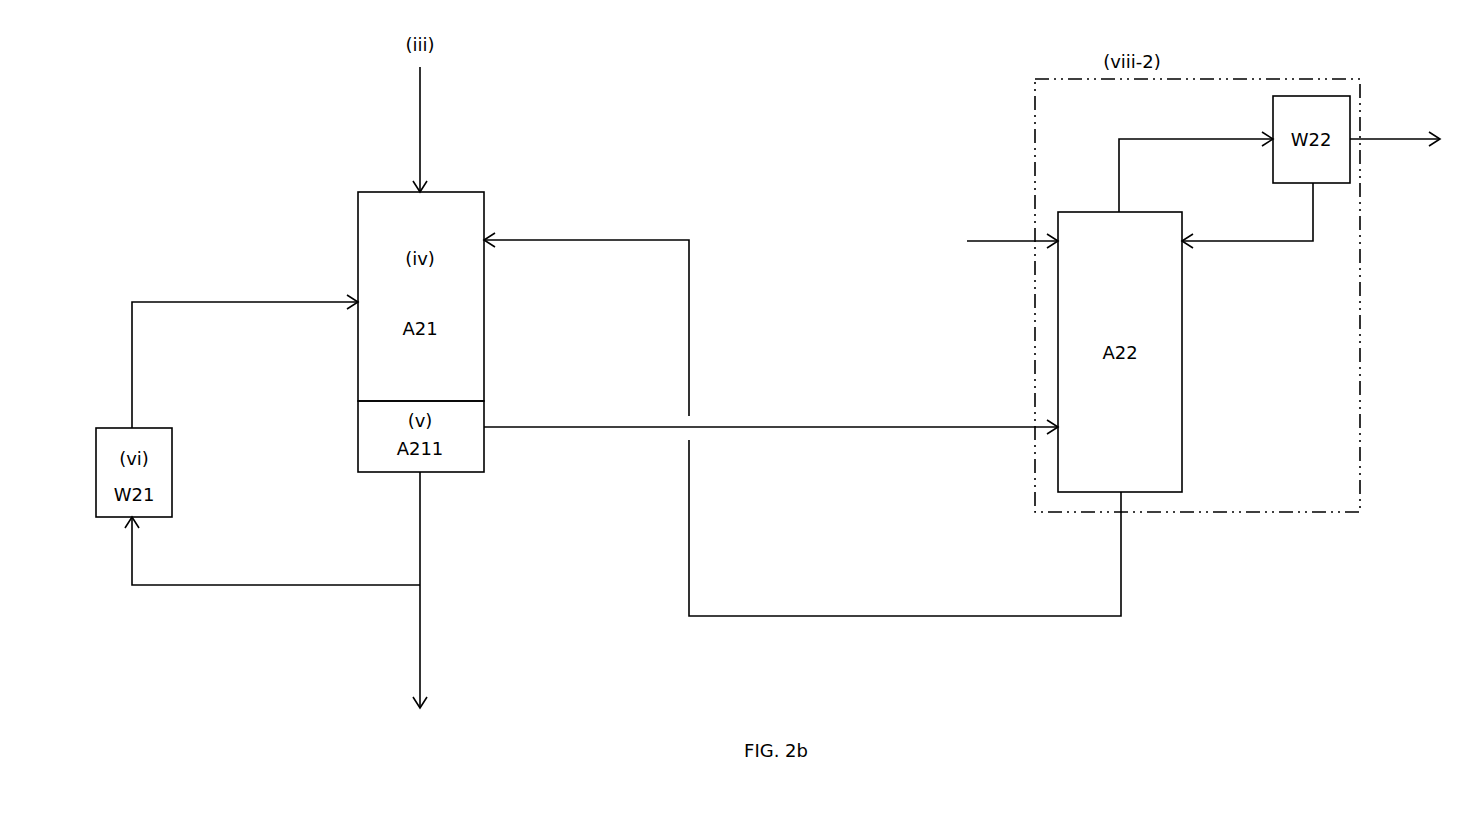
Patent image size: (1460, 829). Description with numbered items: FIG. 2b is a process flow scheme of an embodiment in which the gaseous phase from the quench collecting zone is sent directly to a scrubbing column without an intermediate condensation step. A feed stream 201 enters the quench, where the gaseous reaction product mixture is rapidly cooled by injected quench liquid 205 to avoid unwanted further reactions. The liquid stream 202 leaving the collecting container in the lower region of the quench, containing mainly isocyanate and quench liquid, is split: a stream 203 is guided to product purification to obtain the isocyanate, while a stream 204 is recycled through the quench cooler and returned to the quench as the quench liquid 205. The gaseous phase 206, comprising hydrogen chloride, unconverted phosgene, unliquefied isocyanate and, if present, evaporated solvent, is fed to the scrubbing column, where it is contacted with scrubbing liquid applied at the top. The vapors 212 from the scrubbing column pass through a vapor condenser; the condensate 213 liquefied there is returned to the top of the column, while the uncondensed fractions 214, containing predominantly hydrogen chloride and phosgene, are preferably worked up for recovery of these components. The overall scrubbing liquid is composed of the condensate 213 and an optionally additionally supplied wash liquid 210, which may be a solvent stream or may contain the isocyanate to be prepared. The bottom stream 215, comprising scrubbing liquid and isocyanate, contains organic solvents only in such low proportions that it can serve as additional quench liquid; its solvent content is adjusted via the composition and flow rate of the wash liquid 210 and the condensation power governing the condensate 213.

The feed stream (iii) to unit A21 201 is at (443, 129).
The liquid stream 202 is at (447, 528).
The product purification stream 203 is at (443, 646).
The recycled quench liquid stream 204 is at (272, 551).
The quench liquid 205 is at (245, 350).
The gaseous phase 206 is at (771, 441).
The additionally supplied wash liquid 210 is at (1012, 229).
The vapors 212 is at (1196, 160).
The condensate 213 is at (1247, 215).
The uncondensed fractions 214 is at (1395, 127).
The bottom stream 215 is at (827, 424).